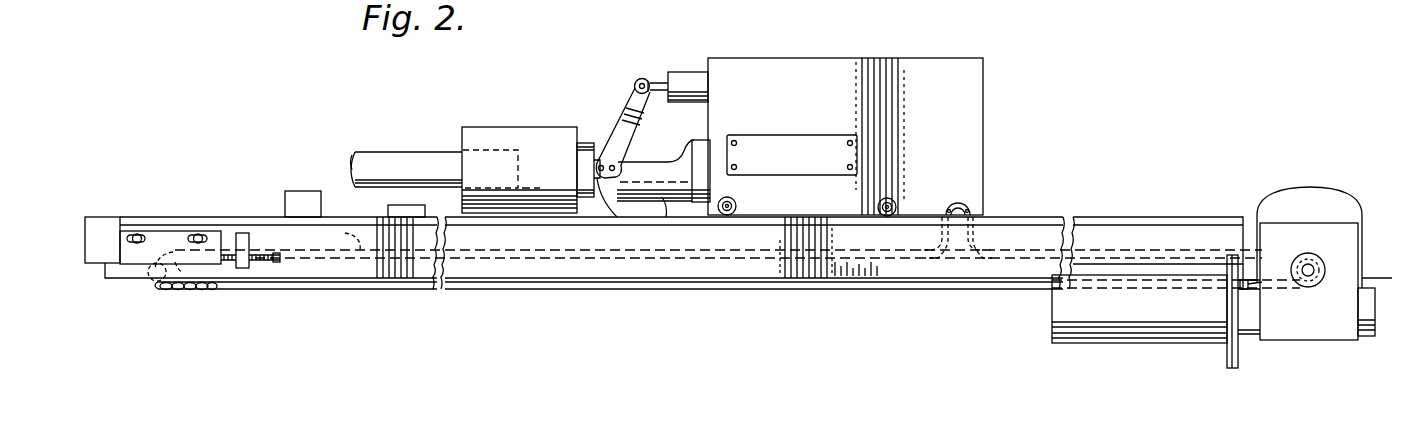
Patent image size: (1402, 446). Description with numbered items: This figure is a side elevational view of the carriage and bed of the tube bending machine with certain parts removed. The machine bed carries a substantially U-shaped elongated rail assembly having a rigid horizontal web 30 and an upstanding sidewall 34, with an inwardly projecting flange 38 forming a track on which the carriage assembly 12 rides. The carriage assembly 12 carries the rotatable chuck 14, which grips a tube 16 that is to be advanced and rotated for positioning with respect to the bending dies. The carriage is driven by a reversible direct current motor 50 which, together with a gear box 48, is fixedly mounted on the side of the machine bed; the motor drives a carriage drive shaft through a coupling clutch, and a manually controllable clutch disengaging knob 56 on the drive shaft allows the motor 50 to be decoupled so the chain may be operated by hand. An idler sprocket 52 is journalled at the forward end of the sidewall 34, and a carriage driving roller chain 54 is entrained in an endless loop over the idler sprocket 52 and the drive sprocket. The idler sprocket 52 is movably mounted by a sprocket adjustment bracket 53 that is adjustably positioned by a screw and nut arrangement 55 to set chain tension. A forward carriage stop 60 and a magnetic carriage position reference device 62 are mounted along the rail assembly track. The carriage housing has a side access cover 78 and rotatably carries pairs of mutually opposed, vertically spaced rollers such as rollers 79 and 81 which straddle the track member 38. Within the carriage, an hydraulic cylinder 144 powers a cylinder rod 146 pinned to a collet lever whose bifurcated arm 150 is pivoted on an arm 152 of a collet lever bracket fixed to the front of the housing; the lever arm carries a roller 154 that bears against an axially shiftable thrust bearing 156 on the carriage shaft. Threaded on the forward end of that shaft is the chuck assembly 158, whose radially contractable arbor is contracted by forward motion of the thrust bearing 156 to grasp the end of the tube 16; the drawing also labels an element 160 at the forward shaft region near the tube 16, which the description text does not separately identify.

The carriage assembly 12 is at (860, 57).
The rotatable chuck 14 is at (508, 152).
The tube 16 is at (354, 152).
The web 30 is at (615, 273).
The second upstanding sidewall 34 is at (728, 245).
The flange 38 is at (822, 201).
The gear box 48 is at (1284, 335).
The reversible direct current motor 50 is at (1052, 320).
The idler sprocket 52 is at (157, 276).
The sprocket adjustment bracket 53 is at (162, 230).
The carriage driving roller chain 54 is at (343, 233).
The screw and nut arrangement 55 is at (246, 228).
The clutch disengaging knob 56 is at (1306, 253).
The forward carriage stop 60 is at (300, 191).
The magnetic carriage position reference device 62 is at (394, 211).
The side access cover 78 is at (788, 150).
The roller 79 is at (736, 200).
The roller 81 is at (897, 203).
The hydraulic cylinder 144 is at (690, 70).
The cylinder rod 146 is at (658, 80).
The lever arm 150 is at (632, 144).
The collet lever bracket arm 152 is at (662, 197).
The roller 154 is at (603, 192).
The thrust bearing 156 is at (590, 140).
The chuck assembly 158 is at (524, 128).
The drive shaft 160 is at (418, 150).